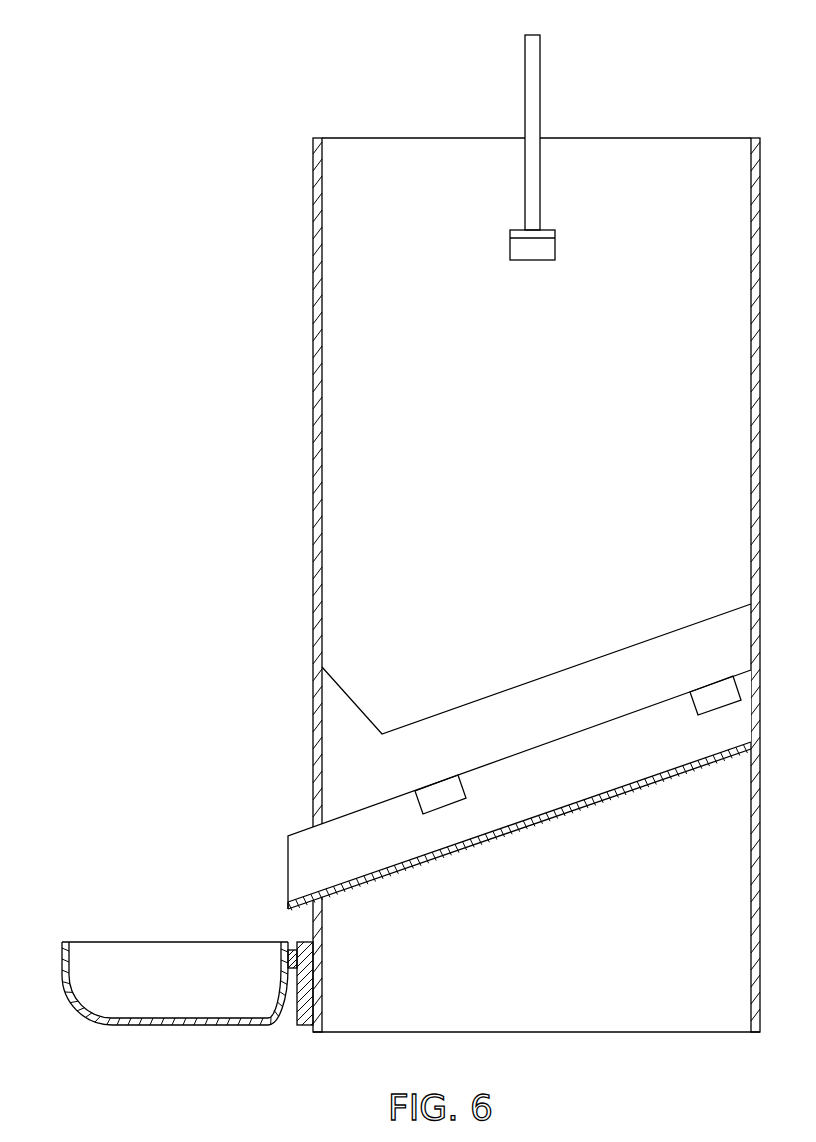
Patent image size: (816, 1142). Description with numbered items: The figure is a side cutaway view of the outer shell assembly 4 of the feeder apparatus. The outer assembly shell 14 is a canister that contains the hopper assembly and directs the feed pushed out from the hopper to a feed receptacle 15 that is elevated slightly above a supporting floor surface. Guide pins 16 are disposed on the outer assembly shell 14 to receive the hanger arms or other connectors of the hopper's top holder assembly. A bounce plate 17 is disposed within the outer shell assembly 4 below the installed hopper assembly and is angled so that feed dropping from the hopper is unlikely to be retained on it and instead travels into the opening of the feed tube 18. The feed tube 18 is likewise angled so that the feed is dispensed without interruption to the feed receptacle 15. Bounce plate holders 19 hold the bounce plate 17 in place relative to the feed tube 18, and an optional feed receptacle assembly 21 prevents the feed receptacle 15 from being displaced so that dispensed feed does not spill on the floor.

The outer shell assembly 4 is at (411, 560).
The outer assembly shell 14 is at (751, 370).
The feed receptacle 15 is at (118, 948).
The guide pins 16 is at (540, 60).
The bounce plate 17 is at (478, 720).
The feed tube 18 is at (320, 893).
The bounce plate holders 19 is at (712, 707).
The feed receptacle assembly 21 is at (303, 1003).